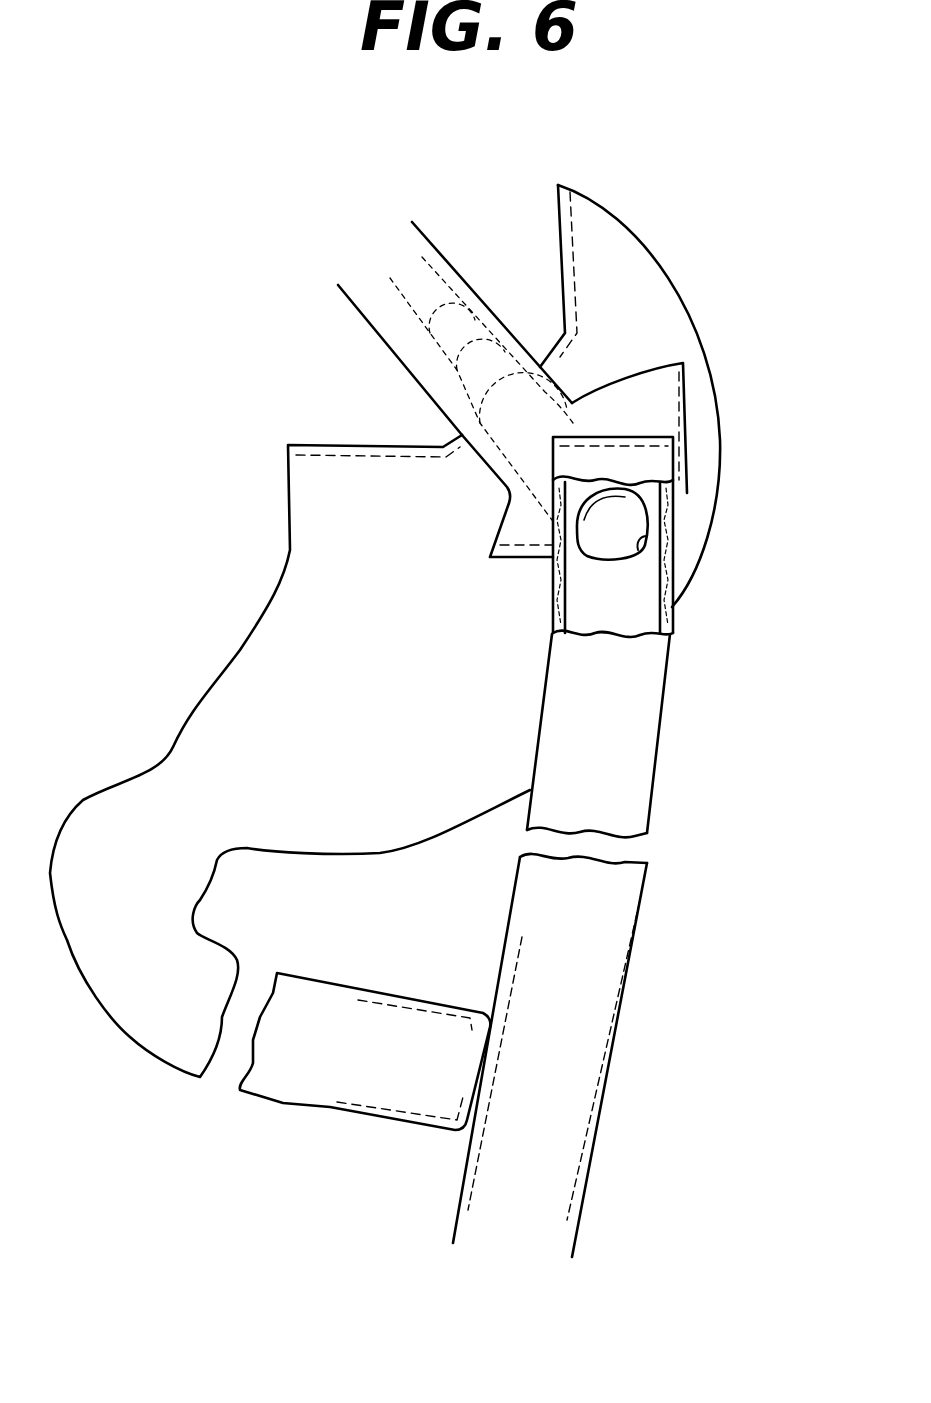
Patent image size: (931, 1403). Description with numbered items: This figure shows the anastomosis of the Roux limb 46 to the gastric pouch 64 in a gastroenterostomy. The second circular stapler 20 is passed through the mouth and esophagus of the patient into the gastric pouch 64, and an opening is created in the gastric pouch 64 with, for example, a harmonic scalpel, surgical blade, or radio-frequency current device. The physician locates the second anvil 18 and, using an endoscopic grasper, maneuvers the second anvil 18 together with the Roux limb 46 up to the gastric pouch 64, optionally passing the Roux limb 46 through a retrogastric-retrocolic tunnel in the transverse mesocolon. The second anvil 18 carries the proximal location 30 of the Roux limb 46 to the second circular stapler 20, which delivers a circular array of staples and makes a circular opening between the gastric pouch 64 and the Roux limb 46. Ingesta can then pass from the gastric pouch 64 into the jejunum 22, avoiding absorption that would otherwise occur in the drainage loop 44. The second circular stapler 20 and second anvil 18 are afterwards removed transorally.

The second anvil 18 is at (643, 543).
The second circular stapler 20 is at (580, 427).
The jejunum 22 is at (640, 897).
The proximal location 30 is at (672, 610).
The drainage loop 44 is at (313, 1108).
The Roux limb 46 is at (662, 762).
The gastric pouch 64 is at (513, 525).